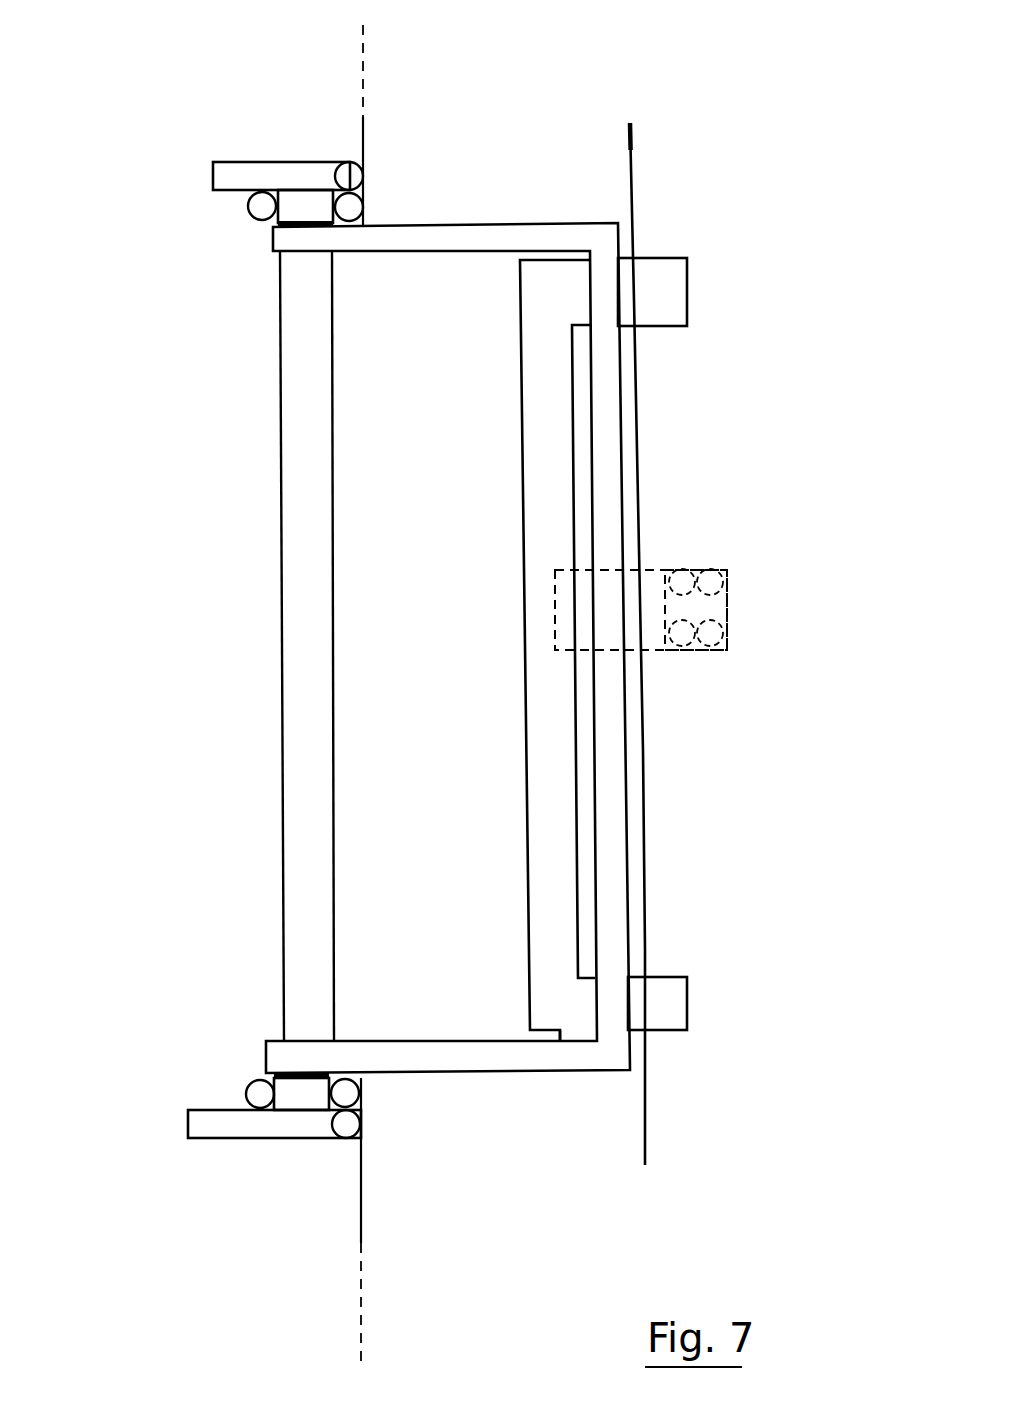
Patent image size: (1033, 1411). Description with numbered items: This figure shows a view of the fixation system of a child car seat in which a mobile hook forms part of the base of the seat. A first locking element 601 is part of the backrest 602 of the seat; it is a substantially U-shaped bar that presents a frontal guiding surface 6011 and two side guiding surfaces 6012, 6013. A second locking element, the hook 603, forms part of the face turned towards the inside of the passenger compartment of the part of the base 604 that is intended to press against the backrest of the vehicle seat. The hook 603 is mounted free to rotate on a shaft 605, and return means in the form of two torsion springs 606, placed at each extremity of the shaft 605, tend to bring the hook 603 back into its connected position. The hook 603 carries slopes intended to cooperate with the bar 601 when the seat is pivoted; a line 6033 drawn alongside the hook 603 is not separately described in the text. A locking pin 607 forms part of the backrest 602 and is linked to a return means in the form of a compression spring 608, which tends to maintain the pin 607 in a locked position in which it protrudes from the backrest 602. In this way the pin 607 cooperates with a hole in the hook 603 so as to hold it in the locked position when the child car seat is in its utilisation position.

The first locking element 601 is at (538, 290).
The backrest 602 is at (643, 1105).
The hook 603 is at (473, 243).
The base 604 is at (363, 1197).
The shaft 605 is at (315, 332).
The torsion springs 606 is at (233, 180).
The locking pin 607 is at (652, 585).
The compression spring 608 is at (712, 580).
The frontal guiding surface 6011 is at (523, 782).
The side guiding surface 6012 is at (565, 1040).
The side guiding surface 6013 is at (558, 263).
The guide line 6033 is at (623, 832).